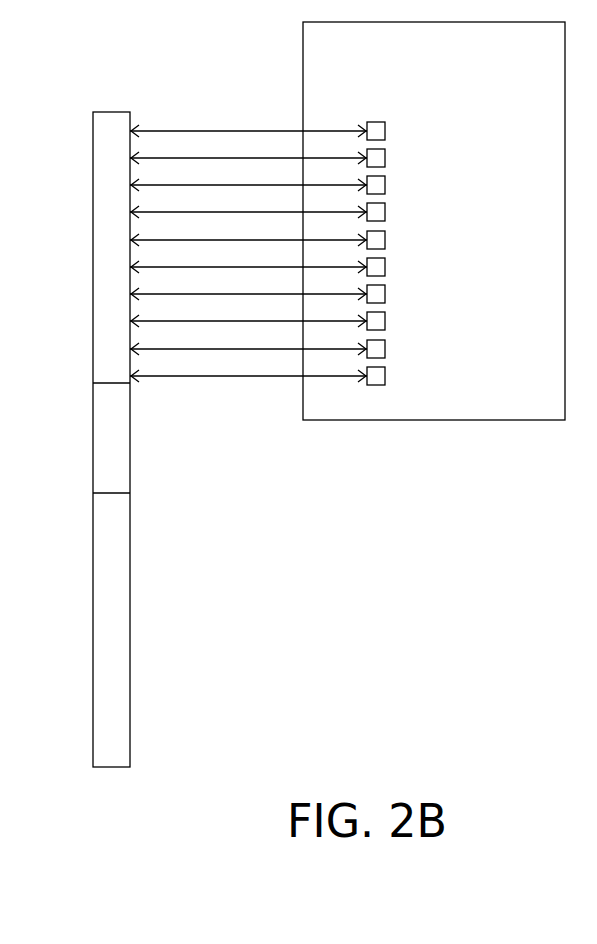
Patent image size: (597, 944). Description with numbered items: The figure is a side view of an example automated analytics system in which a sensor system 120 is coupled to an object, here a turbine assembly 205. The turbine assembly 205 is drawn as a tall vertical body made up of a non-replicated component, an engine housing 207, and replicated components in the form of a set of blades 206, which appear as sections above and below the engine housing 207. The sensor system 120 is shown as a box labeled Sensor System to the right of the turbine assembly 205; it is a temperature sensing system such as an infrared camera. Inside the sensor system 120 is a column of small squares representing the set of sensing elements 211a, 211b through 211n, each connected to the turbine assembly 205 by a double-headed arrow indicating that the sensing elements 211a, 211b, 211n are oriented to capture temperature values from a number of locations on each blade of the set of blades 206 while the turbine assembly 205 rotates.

The sensor system 120 is at (555, 53).
The turbine assembly 205 is at (105, 76).
The set of blades 206 is at (92, 278).
The engine housing 207 is at (92, 443).
The sensing element 211a is at (386, 128).
The sensing element 211b is at (386, 156).
The sensing element 211n is at (386, 375).